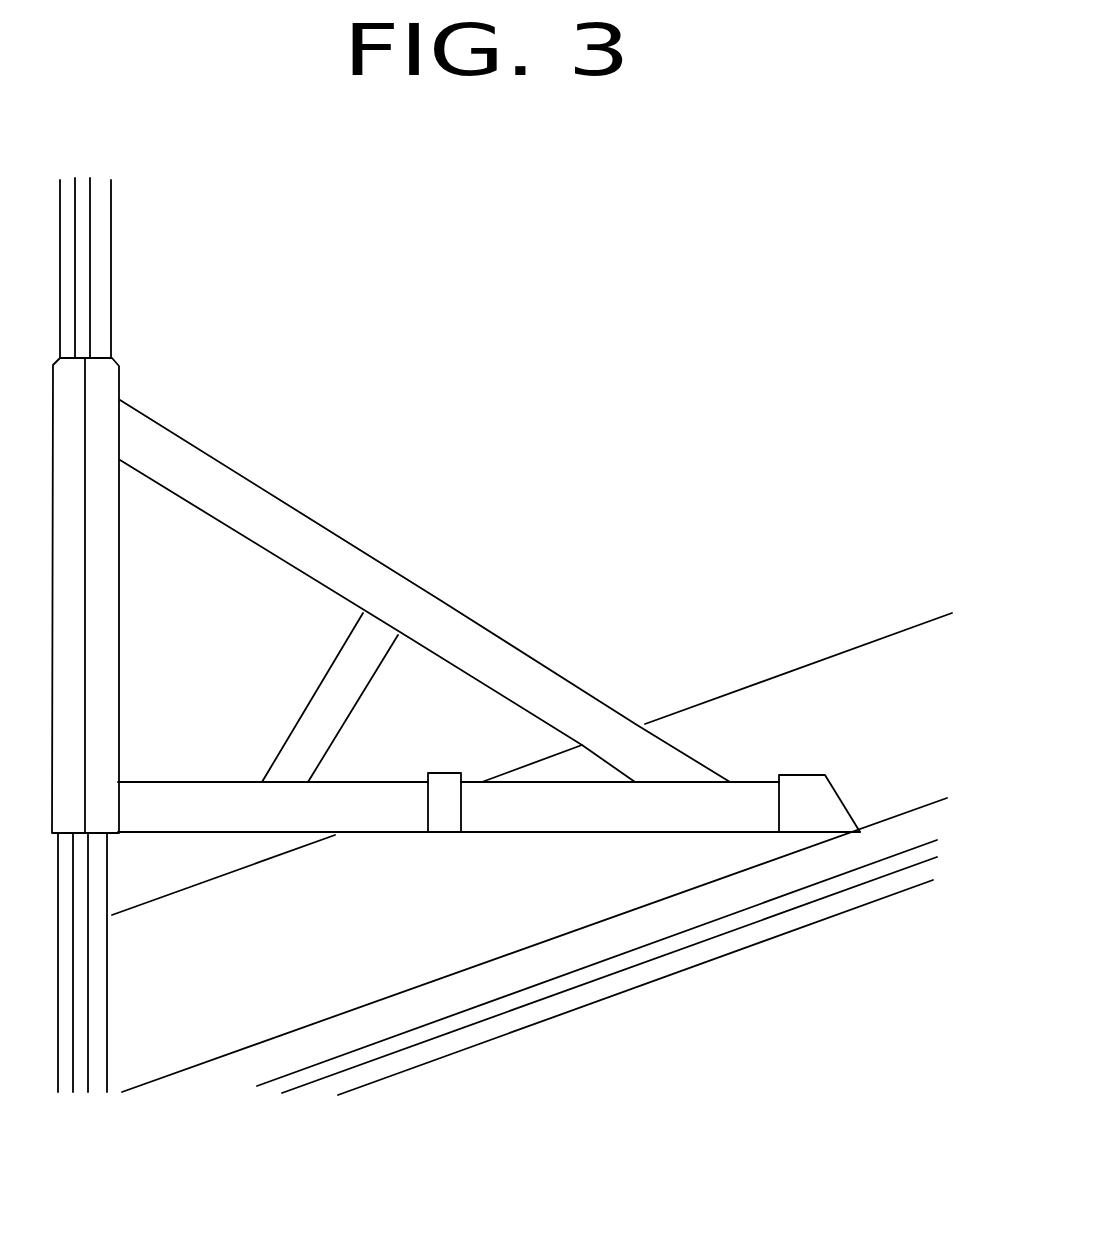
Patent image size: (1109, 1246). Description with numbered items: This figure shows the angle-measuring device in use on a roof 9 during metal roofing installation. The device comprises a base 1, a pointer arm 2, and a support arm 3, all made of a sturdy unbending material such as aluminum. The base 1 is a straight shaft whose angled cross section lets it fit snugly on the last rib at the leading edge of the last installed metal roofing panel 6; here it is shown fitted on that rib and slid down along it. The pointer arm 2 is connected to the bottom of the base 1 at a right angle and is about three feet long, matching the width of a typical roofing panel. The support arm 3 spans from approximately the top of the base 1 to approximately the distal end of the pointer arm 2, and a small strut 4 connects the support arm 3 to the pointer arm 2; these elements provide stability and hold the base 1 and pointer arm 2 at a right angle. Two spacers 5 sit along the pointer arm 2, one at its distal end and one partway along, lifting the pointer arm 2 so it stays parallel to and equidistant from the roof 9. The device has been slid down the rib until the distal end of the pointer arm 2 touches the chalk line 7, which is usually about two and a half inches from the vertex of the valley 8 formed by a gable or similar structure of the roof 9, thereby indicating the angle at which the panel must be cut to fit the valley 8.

The base 1 is at (125, 380).
The pointer arm 2 is at (377, 838).
The support arm 3 is at (510, 633).
The strut 4 is at (308, 700).
The spacers 5 is at (455, 835).
The metal roofing panel 6 is at (117, 222).
The chalk line 7 is at (828, 652).
The valley 8 is at (670, 1052).
The roof 9 is at (428, 430).